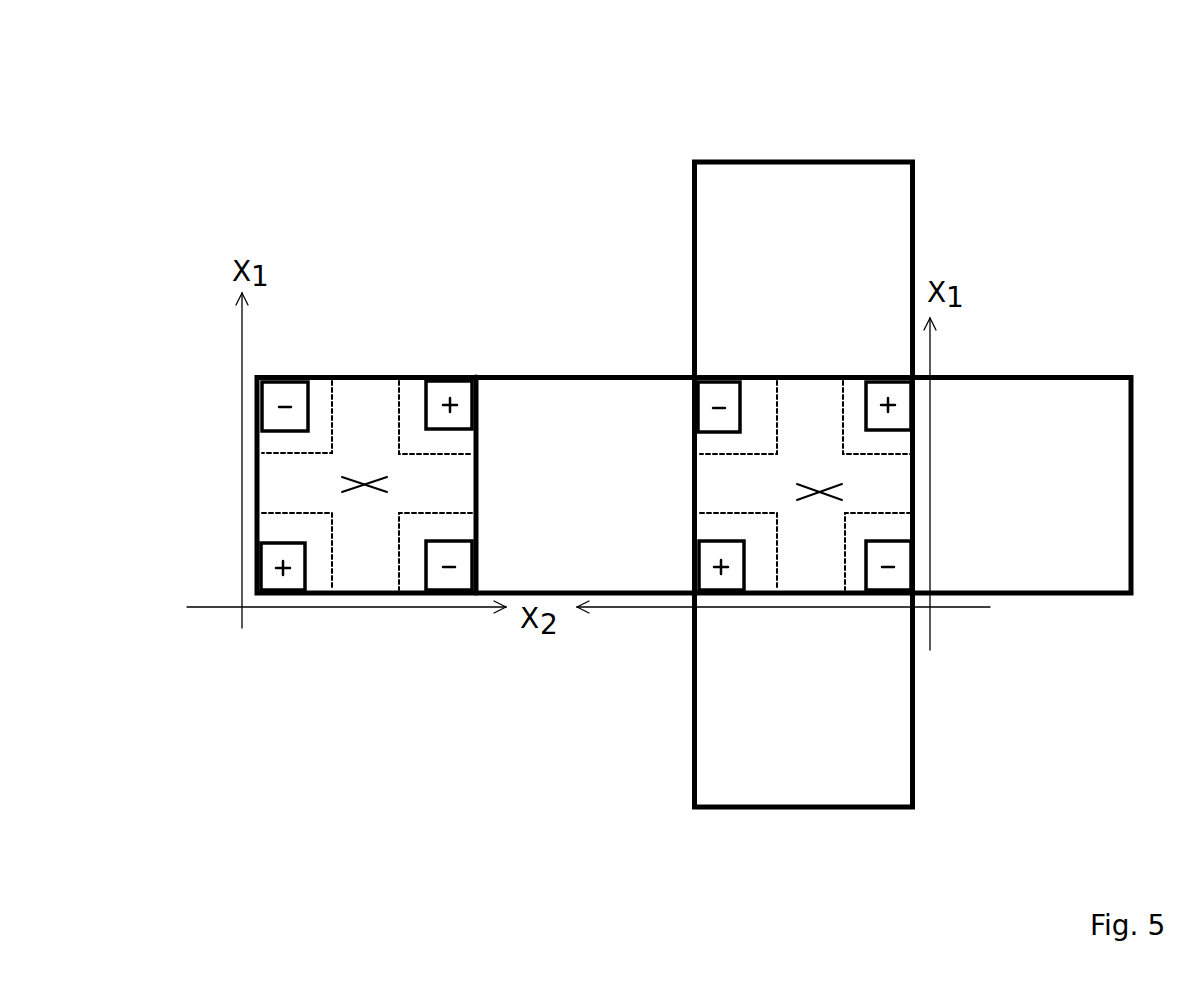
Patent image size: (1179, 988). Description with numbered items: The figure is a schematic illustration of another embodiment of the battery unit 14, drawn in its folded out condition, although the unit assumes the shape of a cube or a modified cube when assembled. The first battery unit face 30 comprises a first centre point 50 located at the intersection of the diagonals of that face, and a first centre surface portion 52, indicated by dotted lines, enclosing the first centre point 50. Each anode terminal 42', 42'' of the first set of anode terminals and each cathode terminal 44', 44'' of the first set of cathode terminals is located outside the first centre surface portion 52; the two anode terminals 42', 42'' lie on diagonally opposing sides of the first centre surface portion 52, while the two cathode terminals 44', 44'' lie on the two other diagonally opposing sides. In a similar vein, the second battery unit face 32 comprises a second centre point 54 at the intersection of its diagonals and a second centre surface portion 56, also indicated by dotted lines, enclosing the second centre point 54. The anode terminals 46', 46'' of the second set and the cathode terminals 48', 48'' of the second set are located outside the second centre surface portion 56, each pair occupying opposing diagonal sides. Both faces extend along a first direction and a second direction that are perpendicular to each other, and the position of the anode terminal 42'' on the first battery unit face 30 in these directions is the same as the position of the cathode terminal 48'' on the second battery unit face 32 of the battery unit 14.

The battery unit 14 is at (413, 162).
The first battery unit face 30 is at (953, 500).
The second battery unit face 32 is at (505, 508).
The anode terminal 42' is at (998, 314).
The anode terminal 42'' is at (574, 656).
The cathode terminal 44' is at (631, 342).
The cathode terminal 44'' is at (1011, 670).
The anode terminal 46' is at (400, 340).
The anode terminal 46'' is at (207, 631).
The cathode terminal 48' is at (205, 371).
The cathode terminal 48'' is at (348, 670).
The first centre point 50 is at (818, 482).
The first centre surface portion 52 is at (720, 452).
The second centre point 54 is at (330, 483).
The second centre surface portion 56 is at (293, 513).